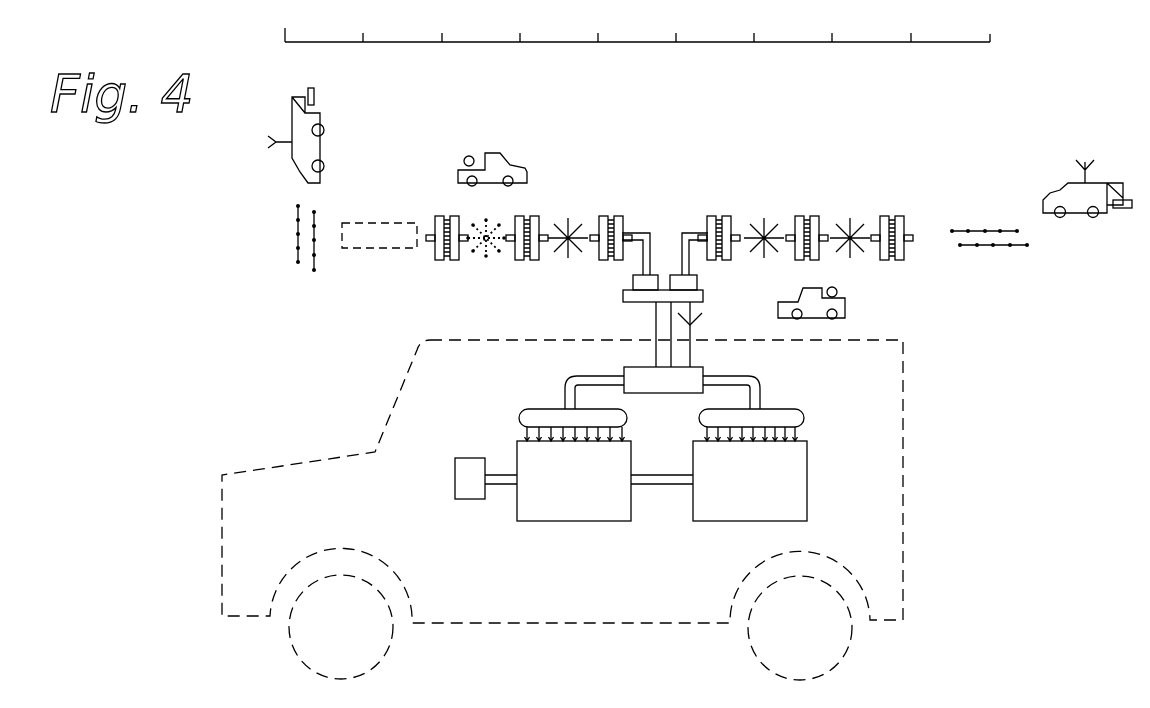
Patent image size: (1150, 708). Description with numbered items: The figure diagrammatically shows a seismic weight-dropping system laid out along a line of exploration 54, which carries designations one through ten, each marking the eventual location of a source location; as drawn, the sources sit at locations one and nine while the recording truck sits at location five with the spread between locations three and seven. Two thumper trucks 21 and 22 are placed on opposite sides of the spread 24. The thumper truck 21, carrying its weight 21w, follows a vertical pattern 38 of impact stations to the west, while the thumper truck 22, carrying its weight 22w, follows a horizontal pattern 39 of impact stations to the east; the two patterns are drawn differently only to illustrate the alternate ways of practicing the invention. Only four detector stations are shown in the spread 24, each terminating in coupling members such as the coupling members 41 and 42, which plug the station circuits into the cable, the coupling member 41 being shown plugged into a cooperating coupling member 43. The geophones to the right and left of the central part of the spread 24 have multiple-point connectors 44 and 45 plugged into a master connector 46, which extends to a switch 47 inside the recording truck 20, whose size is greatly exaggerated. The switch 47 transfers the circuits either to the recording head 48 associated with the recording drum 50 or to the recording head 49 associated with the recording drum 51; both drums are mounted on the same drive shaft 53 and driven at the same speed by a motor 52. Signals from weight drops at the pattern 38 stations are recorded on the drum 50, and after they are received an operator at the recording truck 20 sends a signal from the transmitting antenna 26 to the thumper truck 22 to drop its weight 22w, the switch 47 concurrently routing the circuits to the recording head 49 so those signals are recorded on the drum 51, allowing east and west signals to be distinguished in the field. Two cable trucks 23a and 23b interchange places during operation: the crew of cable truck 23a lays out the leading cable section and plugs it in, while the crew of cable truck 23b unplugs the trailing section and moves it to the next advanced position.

The recording truck 20 is at (907, 457).
The thumper truck 21 is at (290, 126).
The weight 21w is at (314, 97).
The thumper truck 22 is at (1065, 187).
The weight 22w is at (1122, 208).
The cable truck 23a is at (495, 152).
The cable truck 23b is at (843, 293).
The spread 24 is at (710, 222).
The transmitting antenna 26 is at (700, 317).
The vertical pattern of impact stations 38 is at (297, 228).
The horizontal pattern of impact stations 39 is at (1005, 248).
The coupling member 41 is at (815, 220).
The coupling member 42 is at (887, 223).
The cooperating coupling member 43 is at (800, 220).
The multiple-point connector 44 is at (635, 281).
The multiple-point connector 45 is at (697, 281).
The master connector 46 is at (633, 295).
The switch 47 is at (641, 389).
The recording head 48 is at (538, 412).
The recording head 49 is at (773, 413).
The recording drum 50 is at (565, 510).
The recording drum 51 is at (718, 513).
The motor 52 is at (468, 500).
The drive shaft 53 is at (660, 485).
The line of exploration 54 is at (327, 44).